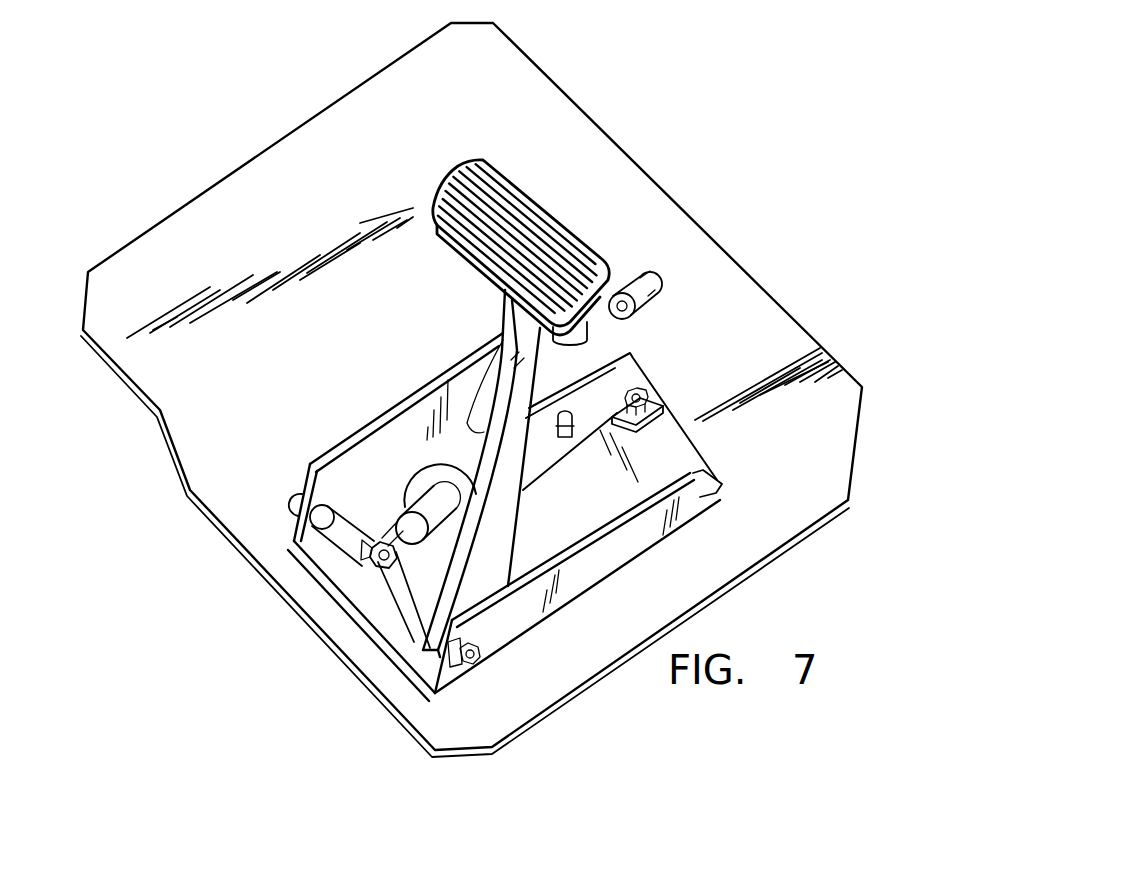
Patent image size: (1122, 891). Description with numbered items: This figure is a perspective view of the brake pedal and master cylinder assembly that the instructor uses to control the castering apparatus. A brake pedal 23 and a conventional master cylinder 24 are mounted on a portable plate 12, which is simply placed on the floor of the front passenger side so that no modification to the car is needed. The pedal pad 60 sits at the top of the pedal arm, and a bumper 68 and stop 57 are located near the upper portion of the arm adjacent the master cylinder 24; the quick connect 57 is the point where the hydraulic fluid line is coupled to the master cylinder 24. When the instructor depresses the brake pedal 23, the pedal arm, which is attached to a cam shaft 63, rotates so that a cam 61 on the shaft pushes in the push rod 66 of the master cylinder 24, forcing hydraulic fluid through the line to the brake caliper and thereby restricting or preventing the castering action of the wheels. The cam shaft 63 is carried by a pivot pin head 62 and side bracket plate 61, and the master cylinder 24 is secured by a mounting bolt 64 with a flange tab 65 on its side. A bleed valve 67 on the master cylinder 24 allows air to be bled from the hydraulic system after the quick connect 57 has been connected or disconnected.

The portable plate 12 is at (317, 241).
The brake pedal 23 is at (478, 578).
The master cylinder 24 is at (618, 365).
The quick connect 57 is at (658, 284).
The pedal pad 60 is at (479, 158).
The cam 61 is at (346, 448).
The pivot pin head 62 is at (301, 503).
The cam shaft 63 is at (388, 598).
The mounting bolt 64 is at (645, 394).
The flange tab 65 is at (693, 490).
The push rod 66 is at (380, 528).
The bleed valve 67 is at (557, 445).
The rubber bumper 68 is at (619, 284).